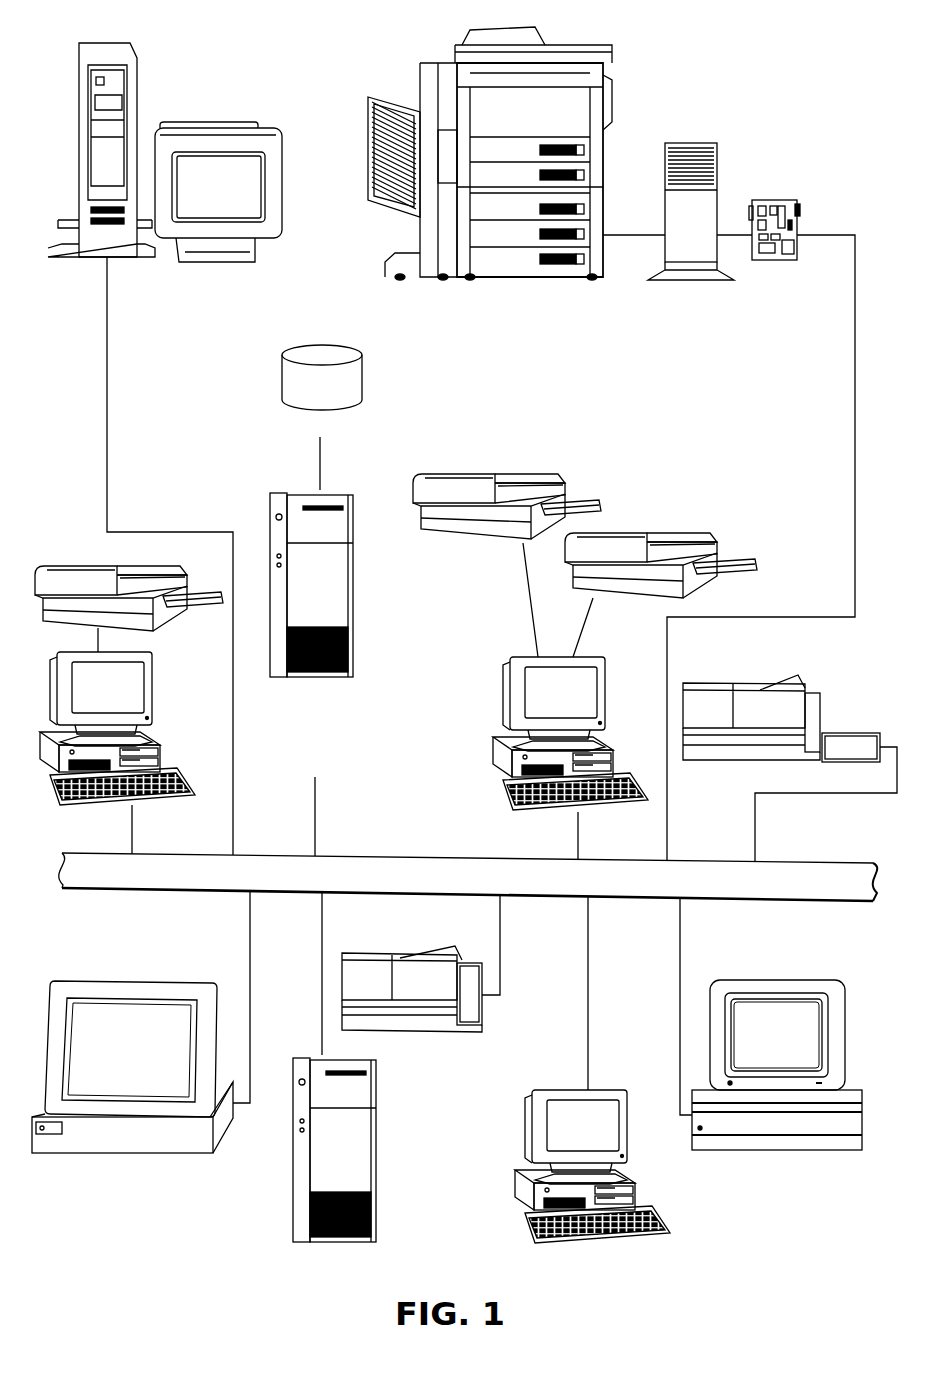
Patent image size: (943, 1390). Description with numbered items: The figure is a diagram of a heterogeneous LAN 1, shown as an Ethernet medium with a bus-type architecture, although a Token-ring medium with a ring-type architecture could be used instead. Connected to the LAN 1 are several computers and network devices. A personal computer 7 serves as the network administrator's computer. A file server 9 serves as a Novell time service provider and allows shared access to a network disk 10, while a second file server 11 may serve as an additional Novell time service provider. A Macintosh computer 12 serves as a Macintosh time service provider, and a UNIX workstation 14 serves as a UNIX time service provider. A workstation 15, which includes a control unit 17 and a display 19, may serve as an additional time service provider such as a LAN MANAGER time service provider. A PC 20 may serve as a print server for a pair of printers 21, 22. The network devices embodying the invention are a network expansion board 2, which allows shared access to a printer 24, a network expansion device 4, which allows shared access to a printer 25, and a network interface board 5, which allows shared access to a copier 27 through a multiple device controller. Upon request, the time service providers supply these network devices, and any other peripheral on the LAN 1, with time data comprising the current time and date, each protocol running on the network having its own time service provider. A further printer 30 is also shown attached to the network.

The LAN 1 is at (376, 868).
The network expansion board (NEB) 2 is at (482, 1010).
The network expansion device (NED) 4 is at (852, 733).
The network interface board (NIB) 5 is at (795, 200).
The personal computer (PC) 7 is at (515, 1180).
The file server 9 is at (355, 581).
The network disk 10 is at (282, 386).
The file server 11 is at (380, 1137).
The Macintosh computer 12 is at (795, 980).
The UNIX workstation 14 is at (165, 980).
The workstation 15 is at (179, 80).
The control unit 17 is at (132, 54).
The display 19 is at (238, 122).
The PC 20 is at (607, 706).
The printer 21 is at (570, 495).
The printer 22 is at (656, 532).
The printer 24 is at (437, 974).
The printer 25 is at (781, 703).
The copier 27 is at (558, 45).
The printer 30 is at (82, 566).